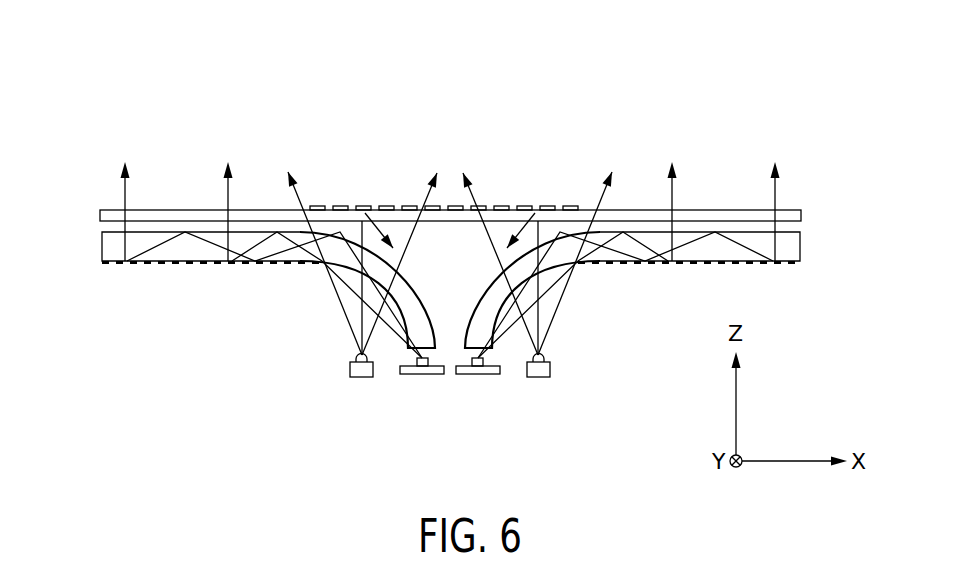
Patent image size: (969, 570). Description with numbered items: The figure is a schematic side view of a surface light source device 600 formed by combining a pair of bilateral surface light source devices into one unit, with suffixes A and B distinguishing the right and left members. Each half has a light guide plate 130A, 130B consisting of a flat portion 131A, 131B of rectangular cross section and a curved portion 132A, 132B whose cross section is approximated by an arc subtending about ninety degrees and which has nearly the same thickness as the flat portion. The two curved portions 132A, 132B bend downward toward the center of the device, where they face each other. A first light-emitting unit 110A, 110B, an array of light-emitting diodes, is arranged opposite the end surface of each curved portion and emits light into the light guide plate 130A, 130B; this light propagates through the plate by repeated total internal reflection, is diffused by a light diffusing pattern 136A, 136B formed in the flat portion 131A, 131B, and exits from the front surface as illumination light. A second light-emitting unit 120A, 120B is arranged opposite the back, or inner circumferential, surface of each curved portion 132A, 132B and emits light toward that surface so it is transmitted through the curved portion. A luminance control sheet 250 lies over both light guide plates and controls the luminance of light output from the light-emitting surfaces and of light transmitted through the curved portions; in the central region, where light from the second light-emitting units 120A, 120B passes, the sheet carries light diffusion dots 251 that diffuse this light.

The surface light source device 600 is at (250, 98).
The luminance control sheet 250 is at (648, 210).
The light diffusion dots 251 is at (355, 206).
The flat portion 131B is at (148, 231).
The flat portion 131A is at (690, 231).
The light guide plate 130B is at (102, 247).
The light guide plate 130A is at (801, 244).
The light diffusing pattern 136B is at (193, 264).
The light diffusing pattern 136A is at (636, 264).
The curved portion 132B is at (400, 312).
The curved portion 132A is at (500, 312).
The first light-emitting unit 110B is at (422, 375).
The first light-emitting unit 110A is at (478, 375).
The second light-emitting unit 120B is at (355, 378).
The second light-emitting unit 120A is at (546, 378).